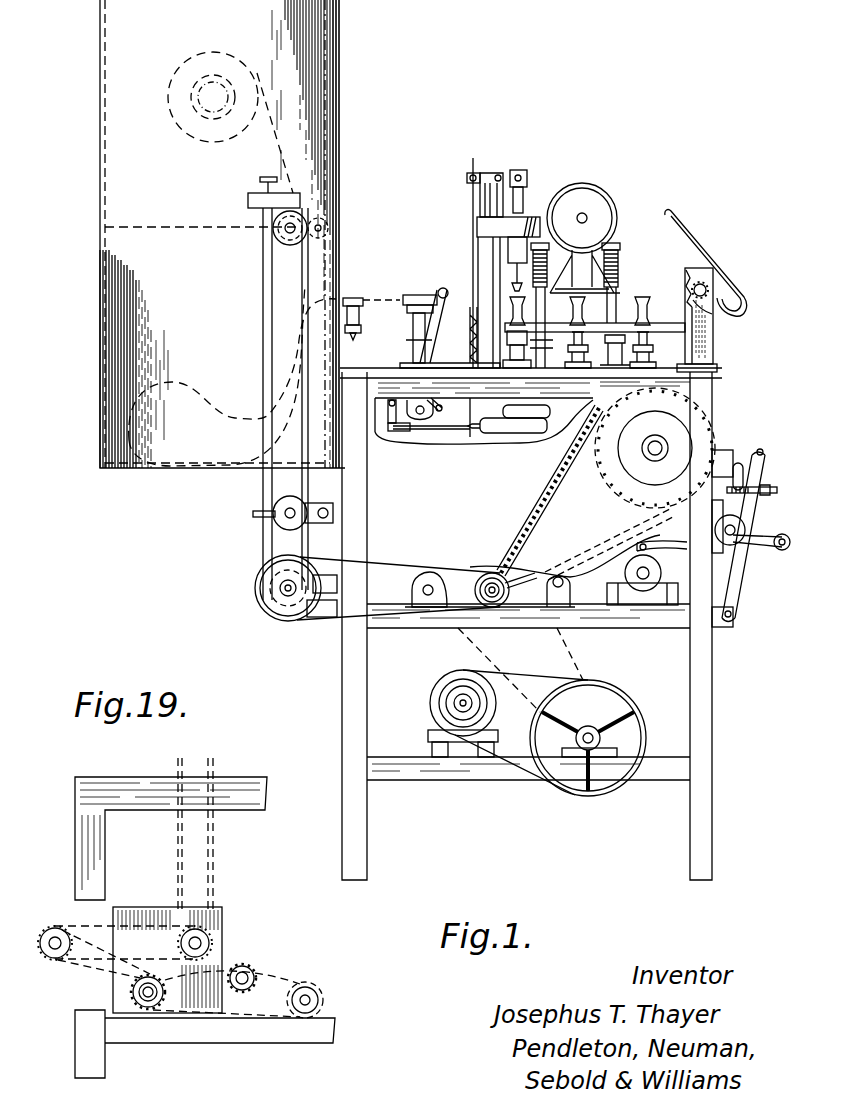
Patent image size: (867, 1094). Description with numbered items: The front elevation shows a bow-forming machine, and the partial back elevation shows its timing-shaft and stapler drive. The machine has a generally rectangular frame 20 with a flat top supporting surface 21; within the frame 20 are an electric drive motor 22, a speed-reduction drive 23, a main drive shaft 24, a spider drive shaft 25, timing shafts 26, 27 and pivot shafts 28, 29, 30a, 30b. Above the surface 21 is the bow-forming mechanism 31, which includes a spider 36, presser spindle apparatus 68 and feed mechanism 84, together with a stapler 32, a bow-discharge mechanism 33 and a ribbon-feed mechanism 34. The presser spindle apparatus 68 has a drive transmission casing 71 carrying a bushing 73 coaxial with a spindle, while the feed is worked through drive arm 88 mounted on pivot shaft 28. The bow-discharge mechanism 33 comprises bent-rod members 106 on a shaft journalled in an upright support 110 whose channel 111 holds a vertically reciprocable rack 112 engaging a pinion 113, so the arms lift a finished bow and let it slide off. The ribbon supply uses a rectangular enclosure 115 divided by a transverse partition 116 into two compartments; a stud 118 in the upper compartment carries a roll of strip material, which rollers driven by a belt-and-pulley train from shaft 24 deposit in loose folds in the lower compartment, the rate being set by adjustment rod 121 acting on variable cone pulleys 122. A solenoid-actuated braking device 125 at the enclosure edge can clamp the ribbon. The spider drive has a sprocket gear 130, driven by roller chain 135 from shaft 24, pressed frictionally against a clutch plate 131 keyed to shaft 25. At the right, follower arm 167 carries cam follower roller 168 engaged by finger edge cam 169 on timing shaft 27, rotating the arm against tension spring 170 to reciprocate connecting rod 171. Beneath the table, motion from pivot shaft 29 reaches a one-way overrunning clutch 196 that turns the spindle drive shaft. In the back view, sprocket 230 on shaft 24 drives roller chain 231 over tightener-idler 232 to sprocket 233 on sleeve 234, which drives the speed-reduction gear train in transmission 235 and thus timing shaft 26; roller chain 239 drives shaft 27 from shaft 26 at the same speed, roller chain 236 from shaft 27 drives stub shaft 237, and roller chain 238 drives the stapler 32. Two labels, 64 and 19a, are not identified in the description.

In FIG. 1, the enclosure 115 is at (349, 58).
In FIG. 1, the transverse partition 116 is at (192, 233).
In FIG. 1, the stud 118 is at (192, 97).
In FIG. 1, the rotatable adjustment rod 121 is at (262, 208).
In FIG. 1, the variable cone pulleys 122 is at (283, 520).
In FIG. 1, the braking device 125 is at (362, 286).
In FIG. 1, the ribbon-feed mechanism 34 is at (199, 480).
In FIG. 1, the frame 20 is at (331, 676).
In FIG. 19, the frame 20 is at (75, 866).
In FIG. 1, the top supporting surface 21 is at (370, 368).
In FIG. 1, the electric drive motor 22 is at (422, 707).
In FIG. 1, the speed-reduction drive 23 is at (608, 806).
In FIG. 1, the main drive shaft 24 is at (497, 582).
In FIG. 19, the main drive shaft 24 is at (322, 999).
In FIG. 1, the spider drive shaft 25 is at (622, 474).
In FIG. 1, the timing shaft 26 is at (643, 582).
In FIG. 19, the timing shaft 26 is at (147, 1006).
In FIG. 1, the timing shaft 27 is at (745, 528).
In FIG. 19, the timing shaft 27 is at (47, 935).
In FIG. 1, the pivot shaft 28 is at (421, 414).
In FIG. 1, the pivot shaft 29 is at (396, 432).
In FIG. 1, the pivot shaft 30a is at (428, 585).
In FIG. 1, the pivot shaft 30b is at (556, 590).
In FIG. 1, the bow-forming mechanism 31 is at (451, 252).
In FIG. 1, the stapler 32 is at (604, 182).
In FIG. 1, the bow-discharge mechanism 33 is at (729, 287).
In FIG. 1, the spider 36 is at (648, 328).
In FIG. 1, the spindle foot 64 is at (628, 352).
In FIG. 1, the presser spindle apparatus 68 is at (503, 164).
In FIG. 1, the drive transmission casing 71 is at (478, 226).
In FIG. 1, the bushing 73 is at (527, 235).
In FIG. 1, the feed mechanism 84 is at (425, 287).
In FIG. 1, the drive arm 88 is at (380, 345).
In FIG. 1, the bent-rod members 106 is at (672, 215).
In FIG. 1, the upright support 110 is at (720, 371).
In FIG. 1, the channel 111 is at (717, 350).
In FIG. 1, the rack 112 is at (712, 313).
In FIG. 1, the pinion 113 is at (708, 289).
In FIG. 1, the sprocket gear 130 is at (640, 472).
In FIG. 1, the clutch plate 131 is at (665, 437).
In FIG. 1, the roller chain 135 is at (540, 508).
In FIG. 1, the follower arm 167 is at (740, 579).
In FIG. 1, the cam follower roller 168 is at (788, 550).
In FIG. 1, the finger edge cam 169 is at (741, 463).
In FIG. 1, the tension spring 170 is at (763, 450).
In FIG. 1, the connecting rod 171 is at (778, 490).
In FIG. 1, the rod 19a is at (455, 432).
In FIG. 1, the one-way overrunning clutch mechanism 196 is at (533, 440).
In FIG. 19, the sprocket 230 is at (316, 988).
In FIG. 19, the roller chain 231 is at (291, 966).
In FIG. 19, the tightener-idler 232 is at (246, 967).
In FIG. 19, the sprocket 233 is at (150, 1005).
In FIG. 19, the sleeve 234 is at (140, 991).
In FIG. 19, the transmission 235 is at (222, 915).
In FIG. 19, the roller chain 236 is at (125, 929).
In FIG. 19, the stub shaft 237 is at (205, 940).
In FIG. 19, the roller chain 238 is at (216, 860).
In FIG. 19, the roller chain 239 is at (68, 978).